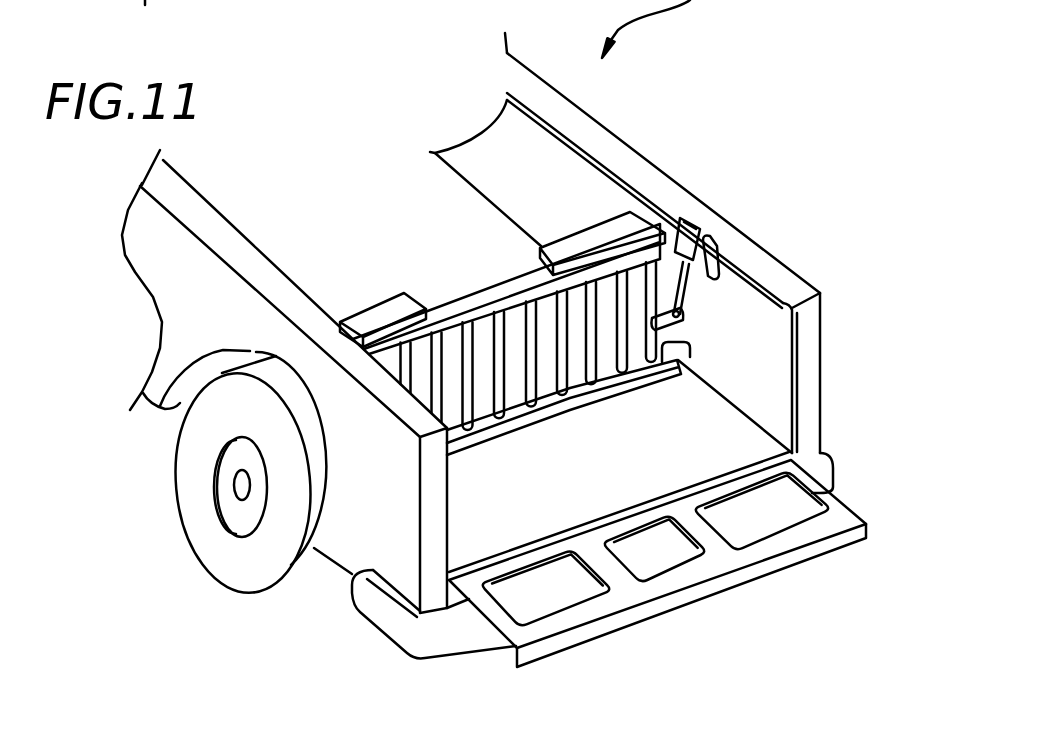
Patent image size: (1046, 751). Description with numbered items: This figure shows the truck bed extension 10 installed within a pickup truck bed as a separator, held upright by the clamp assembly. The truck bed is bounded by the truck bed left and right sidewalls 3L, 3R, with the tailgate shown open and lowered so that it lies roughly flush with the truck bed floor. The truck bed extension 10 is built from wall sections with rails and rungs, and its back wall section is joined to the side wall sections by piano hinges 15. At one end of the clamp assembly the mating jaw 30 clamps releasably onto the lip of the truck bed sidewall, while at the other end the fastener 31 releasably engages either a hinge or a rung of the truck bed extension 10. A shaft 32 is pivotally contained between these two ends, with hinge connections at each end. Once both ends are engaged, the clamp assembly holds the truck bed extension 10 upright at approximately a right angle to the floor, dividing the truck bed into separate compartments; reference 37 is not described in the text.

The truck bed left sidewall 3L is at (197, 191).
The truck bed right sidewall 3R is at (627, 146).
The truck bed extension 10 is at (453, 262).
The piano hinge 15 is at (683, 345).
The mating jaw 30 is at (714, 278).
The fastener 31 is at (668, 362).
The shaft 32 is at (683, 312).
The element 37 (continued from adjacent figure) 37 is at (146, 17).